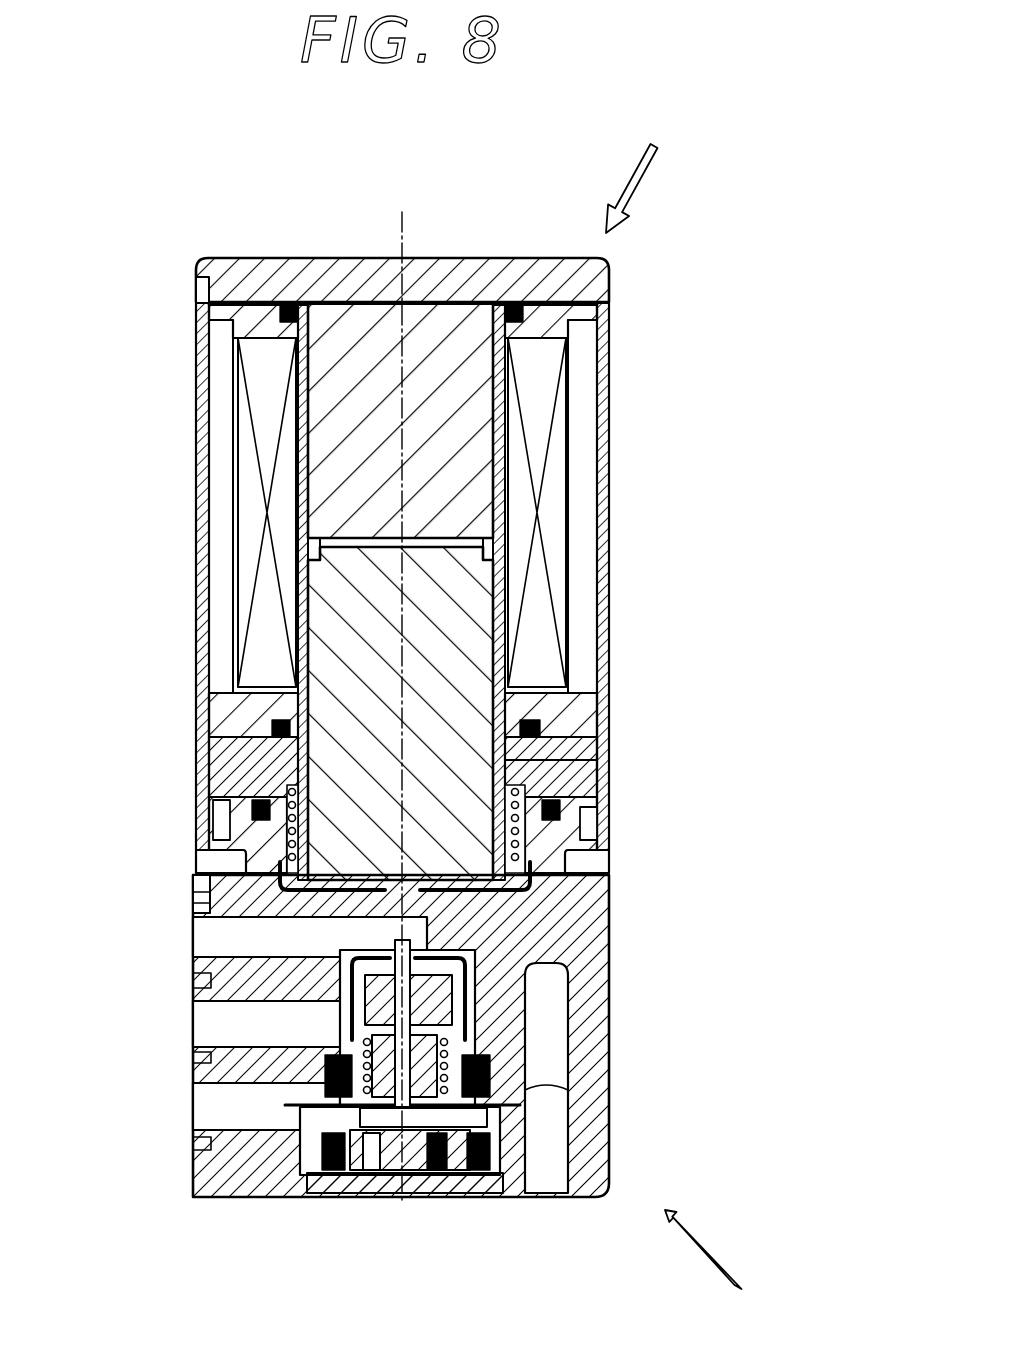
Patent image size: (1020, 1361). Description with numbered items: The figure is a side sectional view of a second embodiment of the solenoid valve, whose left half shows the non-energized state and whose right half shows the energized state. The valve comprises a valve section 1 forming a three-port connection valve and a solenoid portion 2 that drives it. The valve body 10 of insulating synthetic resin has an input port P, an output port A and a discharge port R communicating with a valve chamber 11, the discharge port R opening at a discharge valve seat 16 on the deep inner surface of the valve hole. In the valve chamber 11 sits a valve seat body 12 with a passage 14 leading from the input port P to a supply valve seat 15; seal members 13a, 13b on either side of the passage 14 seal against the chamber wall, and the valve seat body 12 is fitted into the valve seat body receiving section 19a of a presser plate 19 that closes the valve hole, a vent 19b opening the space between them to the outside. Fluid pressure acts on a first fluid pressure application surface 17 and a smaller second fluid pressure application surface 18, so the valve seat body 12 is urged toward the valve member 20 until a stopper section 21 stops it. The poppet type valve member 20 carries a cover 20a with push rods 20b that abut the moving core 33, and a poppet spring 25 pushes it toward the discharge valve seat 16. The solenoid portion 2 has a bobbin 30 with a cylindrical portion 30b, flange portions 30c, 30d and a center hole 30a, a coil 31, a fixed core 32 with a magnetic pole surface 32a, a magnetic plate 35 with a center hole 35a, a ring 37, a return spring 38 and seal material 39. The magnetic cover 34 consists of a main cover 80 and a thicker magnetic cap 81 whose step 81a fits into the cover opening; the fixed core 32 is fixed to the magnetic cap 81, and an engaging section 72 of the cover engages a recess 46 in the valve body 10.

The valve section 1 is at (716, 1259).
The solenoid portion 2 is at (635, 169).
The valve body 10 is at (590, 1142).
The valve chamber 11 is at (262, 1190).
The valve seat body 12 is at (492, 1197).
The seal member 13a is at (555, 1197).
The seal member 13b is at (450, 1195).
The passage 14 is at (443, 1193).
The supply valve seat 15 is at (400, 1062).
The discharge valve seat 16 is at (340, 975).
The first fluid pressure application surface 17 is at (303, 1192).
The second fluid pressure application surface 18 is at (380, 1195).
The presser plate 19 is at (392, 1195).
The valve seat body receiving section 19a is at (462, 1195).
The vent 19b is at (312, 1195).
The valve member 20 is at (435, 1010).
The cover 20a is at (350, 1013).
The push rods 20b is at (430, 987).
The stopper section 21 is at (470, 1100).
The poppet spring 25 is at (300, 1095).
The bobbin 30 is at (296, 492).
The center hole 30a is at (493, 378).
The cylindrical portion 30b is at (300, 425).
The flange portion 30c is at (257, 320).
The flange portion 30d is at (280, 717).
The coil 31 is at (555, 540).
The fixed core 32 is at (448, 440).
The magnetic pole surface 32a is at (320, 573).
The moving core 33 is at (445, 605).
The magnetic cover 34 is at (630, 271).
The magnetic plate 35 is at (245, 768).
The center hole 35a is at (530, 758).
The ring 37 is at (430, 892).
The return spring 38 is at (222, 858).
The seal material 39 is at (512, 303).
The recess 46 is at (530, 868).
The engaging section 72 is at (624, 864).
The main cover 80 is at (609, 413).
The magnetic cap 81 is at (342, 275).
The step 81a is at (196, 290).
The output port A is at (290, 1035).
The input port P is at (235, 1117).
The discharge port R is at (250, 932).